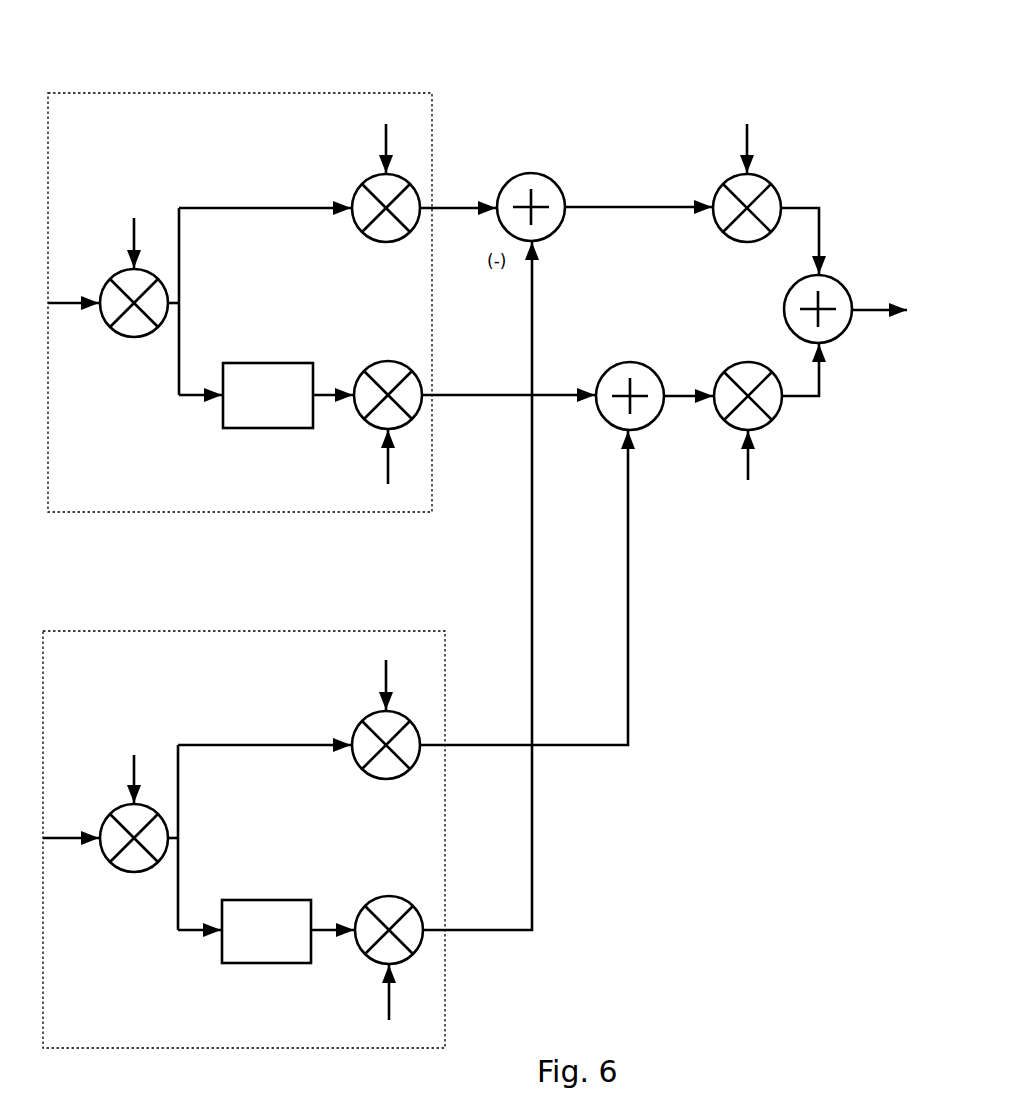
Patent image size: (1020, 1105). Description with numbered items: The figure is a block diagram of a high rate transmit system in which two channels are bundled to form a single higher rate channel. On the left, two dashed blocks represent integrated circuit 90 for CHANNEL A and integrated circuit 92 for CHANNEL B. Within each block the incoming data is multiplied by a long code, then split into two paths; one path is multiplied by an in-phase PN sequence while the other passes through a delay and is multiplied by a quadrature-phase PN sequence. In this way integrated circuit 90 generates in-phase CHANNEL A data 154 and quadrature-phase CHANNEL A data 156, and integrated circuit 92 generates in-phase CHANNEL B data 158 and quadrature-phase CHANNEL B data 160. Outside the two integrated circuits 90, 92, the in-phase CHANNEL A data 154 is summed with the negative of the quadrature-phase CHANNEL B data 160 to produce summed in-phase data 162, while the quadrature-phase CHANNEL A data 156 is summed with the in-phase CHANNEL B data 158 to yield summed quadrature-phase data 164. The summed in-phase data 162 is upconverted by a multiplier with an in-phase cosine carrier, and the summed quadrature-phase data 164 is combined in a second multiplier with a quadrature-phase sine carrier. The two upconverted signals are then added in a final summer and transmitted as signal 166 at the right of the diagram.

The integrated circuit 90 is at (267, 95).
The integrated circuit 92 is at (248, 631).
The in-phase CHANNEL A data 154 is at (452, 207).
The quadrature-phase CHANNEL A data 156 is at (458, 395).
The in-phase CHANNEL B data 158 is at (458, 745).
The quadrature-phase CHANNEL B data 160 is at (455, 932).
The summed in-phase data 162 is at (660, 207).
The summed quadrature-phase data 164 is at (670, 396).
The transmitted signal 166 is at (874, 292).